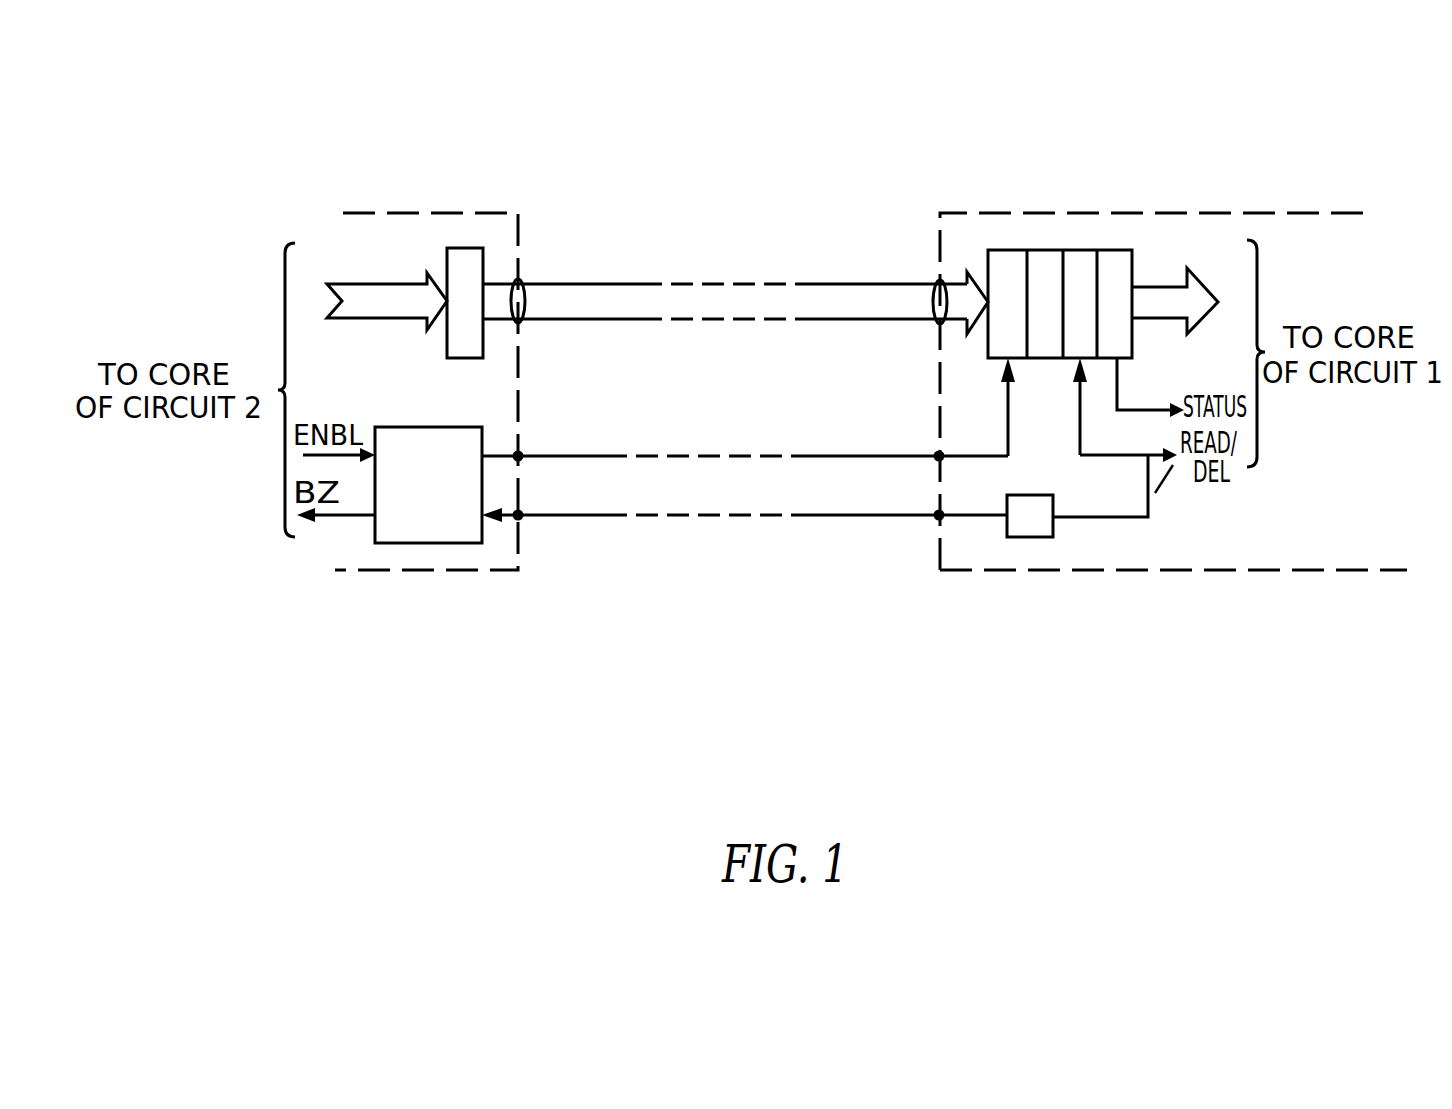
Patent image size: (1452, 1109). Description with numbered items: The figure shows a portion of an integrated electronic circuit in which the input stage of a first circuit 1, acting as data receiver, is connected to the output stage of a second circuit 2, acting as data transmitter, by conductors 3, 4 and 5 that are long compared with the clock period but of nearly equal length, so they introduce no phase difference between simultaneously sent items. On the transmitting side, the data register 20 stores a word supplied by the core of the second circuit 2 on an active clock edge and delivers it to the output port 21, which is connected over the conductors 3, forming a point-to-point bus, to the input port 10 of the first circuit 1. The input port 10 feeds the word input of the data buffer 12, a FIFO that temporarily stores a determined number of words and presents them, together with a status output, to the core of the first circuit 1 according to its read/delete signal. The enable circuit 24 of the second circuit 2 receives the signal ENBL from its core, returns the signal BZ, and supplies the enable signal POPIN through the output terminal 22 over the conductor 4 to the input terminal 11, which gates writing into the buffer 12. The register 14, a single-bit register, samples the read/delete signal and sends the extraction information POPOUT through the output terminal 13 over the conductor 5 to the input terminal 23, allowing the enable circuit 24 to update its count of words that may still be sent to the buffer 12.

The first circuit 1 is at (1217, 570).
The second circuit 2 is at (390, 570).
The conductors 3 is at (610, 284).
The conductor 4 is at (613, 456).
The conductor 5 is at (605, 517).
The input port 10 is at (937, 283).
The input terminal 11 is at (936, 453).
The data buffer 12 is at (1087, 250).
The output terminal 13 is at (936, 518).
The register 14 is at (1032, 537).
The data register 20 is at (467, 248).
The output port 21 is at (521, 289).
The output terminal 22 is at (521, 453).
The input terminal 23 is at (524, 519).
The enable circuit 24 is at (433, 543).